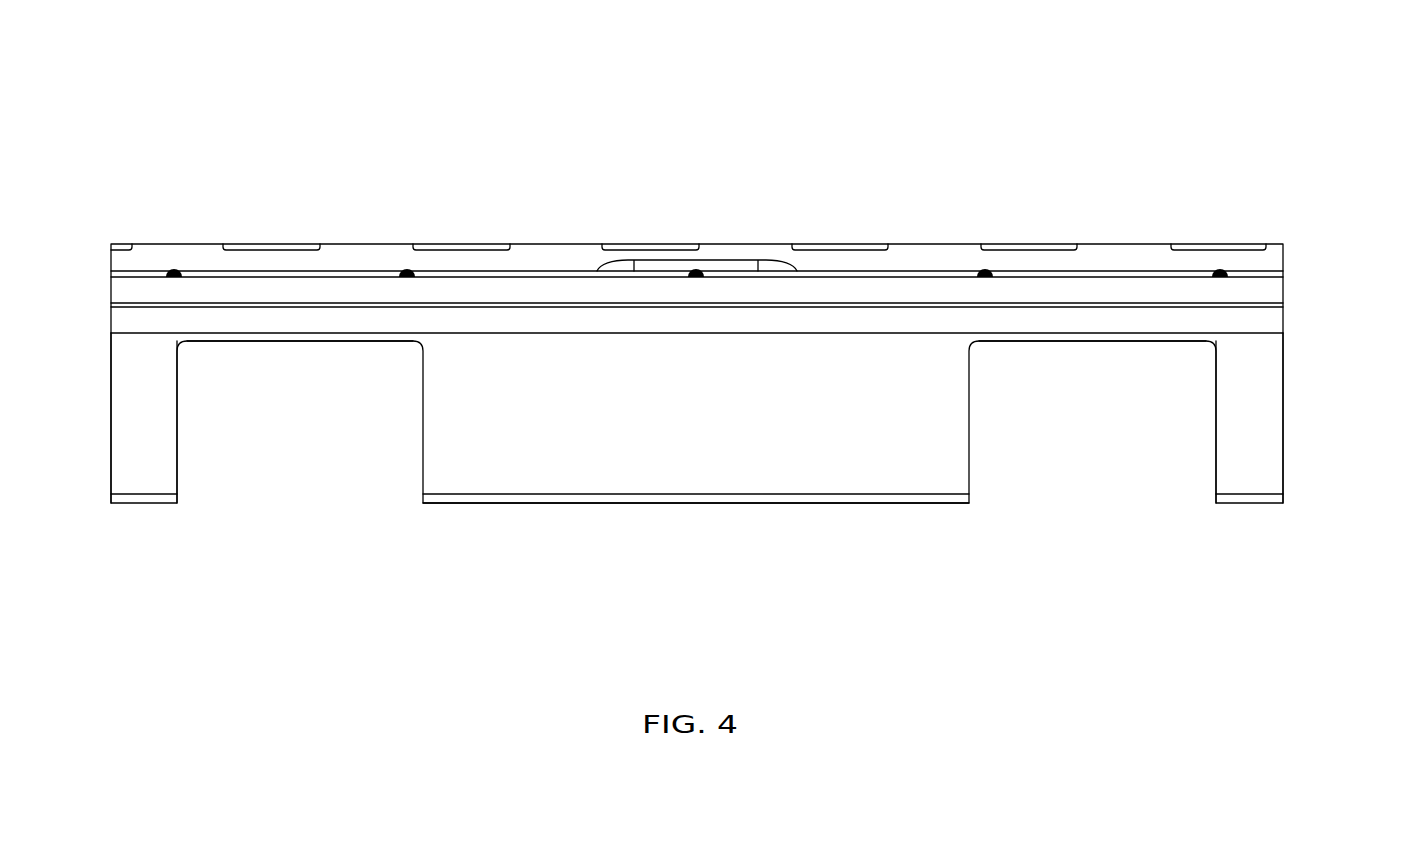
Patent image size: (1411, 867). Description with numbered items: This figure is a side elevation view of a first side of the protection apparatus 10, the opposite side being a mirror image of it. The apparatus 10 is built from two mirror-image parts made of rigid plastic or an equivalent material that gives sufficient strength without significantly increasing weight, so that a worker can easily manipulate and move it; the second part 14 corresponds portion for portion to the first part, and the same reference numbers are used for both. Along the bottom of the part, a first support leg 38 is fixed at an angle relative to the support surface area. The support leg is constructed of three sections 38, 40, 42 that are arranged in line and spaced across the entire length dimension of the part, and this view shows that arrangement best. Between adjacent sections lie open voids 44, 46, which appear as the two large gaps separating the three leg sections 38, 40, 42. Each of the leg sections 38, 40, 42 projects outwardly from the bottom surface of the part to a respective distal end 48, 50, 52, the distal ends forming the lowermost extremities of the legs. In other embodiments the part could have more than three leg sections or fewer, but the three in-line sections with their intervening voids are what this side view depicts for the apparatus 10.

The protection apparatus 10 is at (722, 309).
The second part 14 is at (1299, 362).
The first support leg 38 is at (1266, 418).
The leg section 40 is at (838, 463).
The leg section 42 is at (130, 421).
The open void 44 is at (1069, 473).
The open void 46 is at (298, 470).
The distal end 48 is at (1248, 504).
The distal end 50 is at (479, 503).
The distal end 52 is at (147, 504).